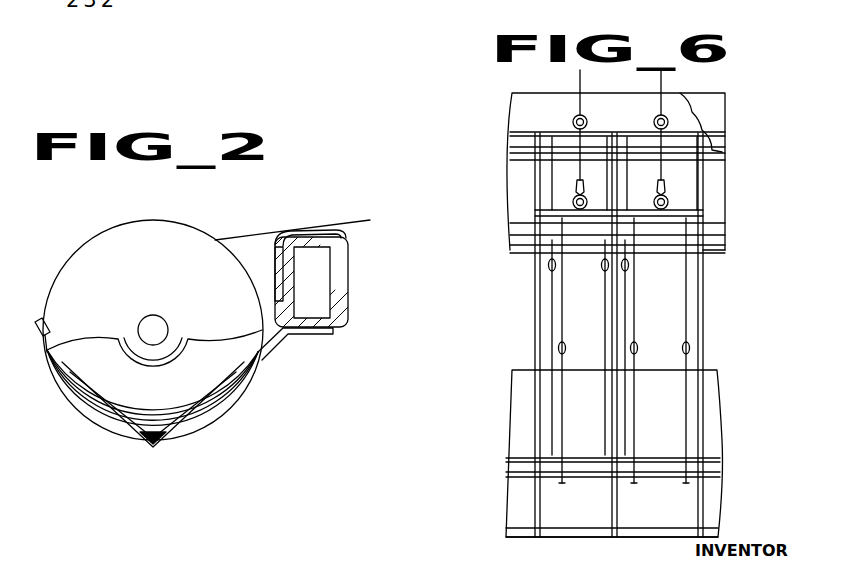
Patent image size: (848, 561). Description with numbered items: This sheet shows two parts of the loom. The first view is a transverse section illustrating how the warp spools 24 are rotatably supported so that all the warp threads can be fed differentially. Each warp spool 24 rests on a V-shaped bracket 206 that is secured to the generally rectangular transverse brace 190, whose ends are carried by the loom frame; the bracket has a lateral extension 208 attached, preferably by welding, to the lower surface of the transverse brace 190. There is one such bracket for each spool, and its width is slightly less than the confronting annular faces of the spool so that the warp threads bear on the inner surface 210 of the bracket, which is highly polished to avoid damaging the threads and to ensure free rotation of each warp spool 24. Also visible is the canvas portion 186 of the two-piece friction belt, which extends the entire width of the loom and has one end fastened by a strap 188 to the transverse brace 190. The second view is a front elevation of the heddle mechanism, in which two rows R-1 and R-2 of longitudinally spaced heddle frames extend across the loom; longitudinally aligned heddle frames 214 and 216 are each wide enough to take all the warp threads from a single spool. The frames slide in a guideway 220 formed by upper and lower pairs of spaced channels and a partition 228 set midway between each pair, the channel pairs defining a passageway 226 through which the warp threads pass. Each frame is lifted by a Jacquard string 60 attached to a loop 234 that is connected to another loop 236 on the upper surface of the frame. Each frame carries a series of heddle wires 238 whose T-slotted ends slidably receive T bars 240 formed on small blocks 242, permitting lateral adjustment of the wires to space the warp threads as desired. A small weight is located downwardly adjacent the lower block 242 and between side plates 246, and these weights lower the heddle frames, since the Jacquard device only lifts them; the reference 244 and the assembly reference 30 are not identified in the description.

In FIG. 2, the warp spool 24 is at (173, 294).
In FIG. 2, the V-shaped bracket 206 is at (205, 410).
In FIG. 2, the inner surface 210 is at (108, 390).
In FIG. 2, the transverse brace 190 is at (333, 272).
In FIG. 2, the strap 188 is at (274, 292).
In FIG. 2, the canvas portion 186 is at (340, 232).
In FIG. 2, the lateral extension 208 is at (298, 330).
In FIG. 6, the guideway 220 is at (506, 108).
In FIG. 6, the partition 228 is at (712, 112).
In FIG. 6, the bottom plate 244 is at (550, 511).
In FIG. 6, the heddle frame 216 is at (532, 186).
In FIG. 6, the heddle frame 214 is at (535, 335).
In FIG. 6, the row of heddle frames R-2 is at (515, 165).
In FIG. 6, the row of heddle frames R-1 is at (535, 296).
In FIG. 6, the T bar 240 is at (513, 147).
In FIG. 6, the small block 242 is at (720, 158).
In FIG. 6, the passageway 226 is at (710, 255).
In FIG. 6, the Jacquard string 60 is at (658, 80).
In FIG. 6, the loop 236 is at (578, 116).
In FIG. 6, the loop 234 is at (666, 186).
In FIG. 6, the heddle wires 238 is at (548, 275).
In FIG. 6, the side plates 246 is at (538, 362).
In FIG. 6, the assembly 30 is at (465, 402).